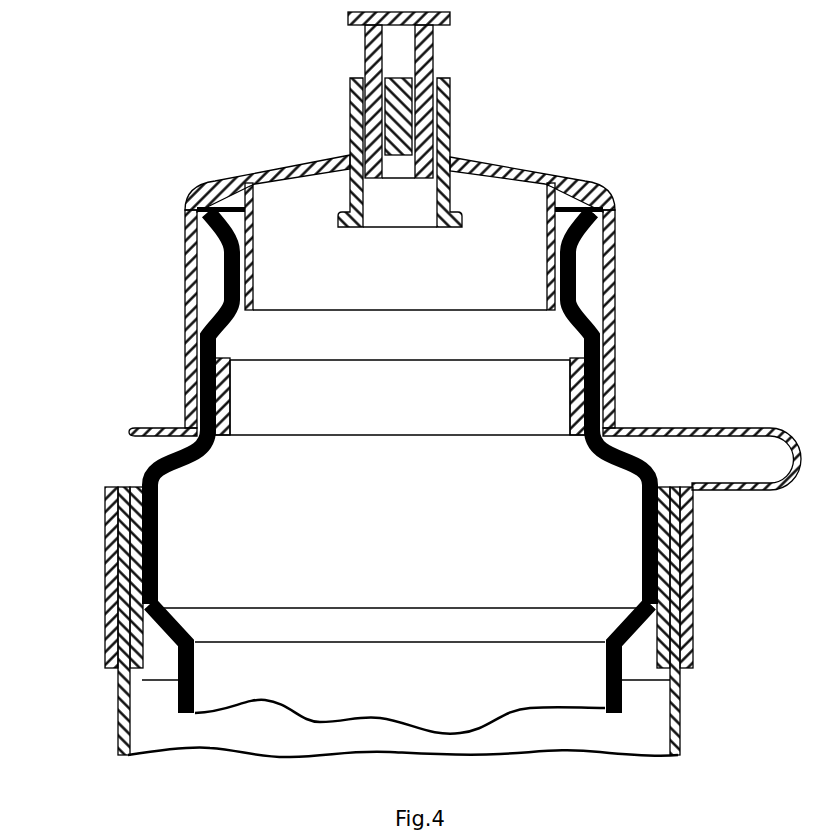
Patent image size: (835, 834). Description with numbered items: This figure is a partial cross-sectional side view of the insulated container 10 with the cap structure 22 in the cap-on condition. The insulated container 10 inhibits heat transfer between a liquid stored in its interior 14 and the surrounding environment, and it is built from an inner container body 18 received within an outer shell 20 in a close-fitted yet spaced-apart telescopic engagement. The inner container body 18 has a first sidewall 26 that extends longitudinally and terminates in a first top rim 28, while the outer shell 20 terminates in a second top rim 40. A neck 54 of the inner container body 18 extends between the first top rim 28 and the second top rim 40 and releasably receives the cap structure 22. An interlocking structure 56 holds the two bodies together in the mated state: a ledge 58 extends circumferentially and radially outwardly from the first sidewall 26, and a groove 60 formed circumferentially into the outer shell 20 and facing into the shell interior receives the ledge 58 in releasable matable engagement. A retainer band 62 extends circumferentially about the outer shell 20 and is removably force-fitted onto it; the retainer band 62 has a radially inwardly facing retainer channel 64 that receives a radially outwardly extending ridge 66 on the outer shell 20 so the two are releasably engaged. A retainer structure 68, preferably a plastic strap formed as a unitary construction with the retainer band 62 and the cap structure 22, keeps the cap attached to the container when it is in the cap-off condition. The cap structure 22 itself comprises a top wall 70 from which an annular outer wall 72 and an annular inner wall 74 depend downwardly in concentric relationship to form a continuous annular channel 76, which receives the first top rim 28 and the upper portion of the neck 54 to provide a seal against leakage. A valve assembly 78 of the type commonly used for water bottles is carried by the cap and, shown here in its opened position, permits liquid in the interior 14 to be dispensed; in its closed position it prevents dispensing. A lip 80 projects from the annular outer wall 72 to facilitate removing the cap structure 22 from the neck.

The insulated container 10 is at (668, 201).
The interior 14 is at (419, 526).
The inner container body 18 is at (632, 703).
The outer shell 20 is at (418, 558).
The cap structure 22 is at (387, 277).
The first sidewall 26 is at (177, 688).
The first top rim 28 is at (183, 255).
The second top rim 40 is at (665, 483).
The neck 54 is at (193, 445).
The interlocking structure 56 is at (400, 546).
The ledge 58 is at (162, 512).
The groove 60 is at (160, 583).
The retainer band 62 is at (404, 577).
The retainer channel 64 is at (128, 555).
The ridge 66 is at (105, 508).
The retainer structure 68 is at (748, 430).
The top wall 70 is at (502, 160).
The annular outer wall 72 is at (183, 323).
The annular inner wall 74 is at (257, 262).
The continuous annular channel 76 is at (210, 290).
The valve assembly 78 is at (462, 74).
The lip 80 is at (128, 425).